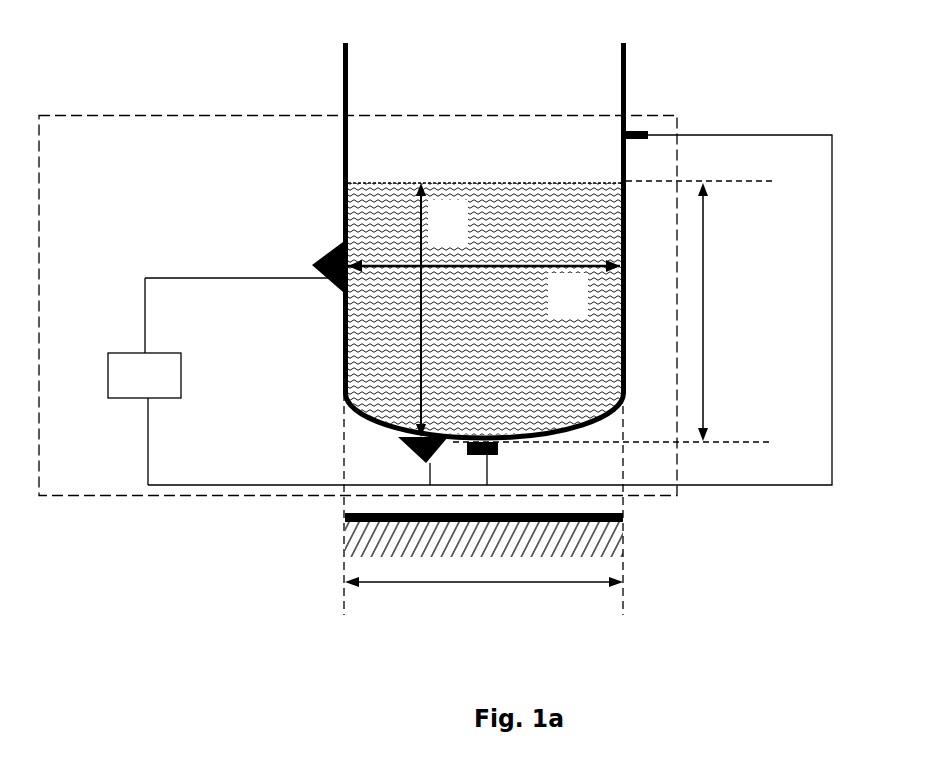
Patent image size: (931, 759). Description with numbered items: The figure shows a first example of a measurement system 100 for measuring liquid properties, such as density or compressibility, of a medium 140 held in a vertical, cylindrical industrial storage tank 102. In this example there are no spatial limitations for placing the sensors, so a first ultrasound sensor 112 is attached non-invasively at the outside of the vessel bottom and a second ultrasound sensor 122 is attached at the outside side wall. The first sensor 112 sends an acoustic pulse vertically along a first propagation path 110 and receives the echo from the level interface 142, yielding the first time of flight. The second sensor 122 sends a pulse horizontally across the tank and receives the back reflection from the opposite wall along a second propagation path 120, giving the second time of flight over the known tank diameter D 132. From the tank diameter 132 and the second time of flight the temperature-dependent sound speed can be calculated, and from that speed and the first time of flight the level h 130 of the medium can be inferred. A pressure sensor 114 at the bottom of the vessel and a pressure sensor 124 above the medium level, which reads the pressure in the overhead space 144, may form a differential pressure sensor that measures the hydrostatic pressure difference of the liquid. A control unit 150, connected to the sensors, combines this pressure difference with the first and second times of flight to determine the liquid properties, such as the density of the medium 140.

The measurement system 100 is at (108, 116).
The storage tank 102 is at (623, 72).
The first propagation path 110 is at (420, 200).
The first ultrasound sensor 112 is at (413, 453).
The pressure sensor 114 is at (498, 455).
The second propagation path 120 is at (623, 260).
The second ultrasound sensor 122 is at (330, 250).
The pressure sensor 124 is at (642, 128).
The level 130 is at (703, 267).
The tank diameter 132 is at (518, 582).
The medium 140 is at (512, 222).
The level interface 142 is at (378, 182).
The overhead space 144 is at (356, 138).
The control unit 150 is at (122, 353).